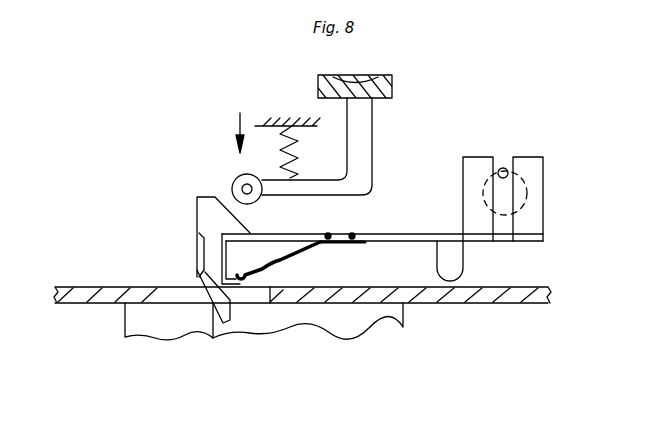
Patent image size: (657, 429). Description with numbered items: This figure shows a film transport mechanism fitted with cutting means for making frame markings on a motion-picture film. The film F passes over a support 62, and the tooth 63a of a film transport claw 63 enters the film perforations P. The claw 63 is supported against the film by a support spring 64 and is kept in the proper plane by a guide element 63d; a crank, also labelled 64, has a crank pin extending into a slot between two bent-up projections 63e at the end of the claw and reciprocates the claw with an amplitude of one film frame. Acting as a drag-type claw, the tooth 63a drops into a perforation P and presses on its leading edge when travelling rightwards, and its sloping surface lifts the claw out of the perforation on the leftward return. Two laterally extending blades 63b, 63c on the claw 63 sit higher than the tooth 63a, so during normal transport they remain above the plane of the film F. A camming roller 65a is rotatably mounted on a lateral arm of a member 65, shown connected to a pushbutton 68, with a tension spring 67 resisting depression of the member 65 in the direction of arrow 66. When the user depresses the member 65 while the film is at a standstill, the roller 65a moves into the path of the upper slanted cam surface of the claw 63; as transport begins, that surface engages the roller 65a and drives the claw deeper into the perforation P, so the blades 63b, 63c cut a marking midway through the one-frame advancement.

The film F is at (83, 287).
The film perforation P is at (172, 297).
The support 62 is at (277, 318).
The film transport claw 63 is at (380, 234).
The tooth 63a is at (217, 312).
The laterally extending blade 63b is at (199, 236).
The laterally extending blade 63c is at (222, 262).
The guide element 63d is at (447, 241).
The posts of lever 63e is at (524, 160).
The support spring 64 is at (500, 190).
The member 65 is at (372, 120).
The camming roller 65a is at (233, 180).
The arrow 66 is at (240, 120).
The tension spring 67 is at (300, 152).
The pushbutton 68 is at (392, 82).